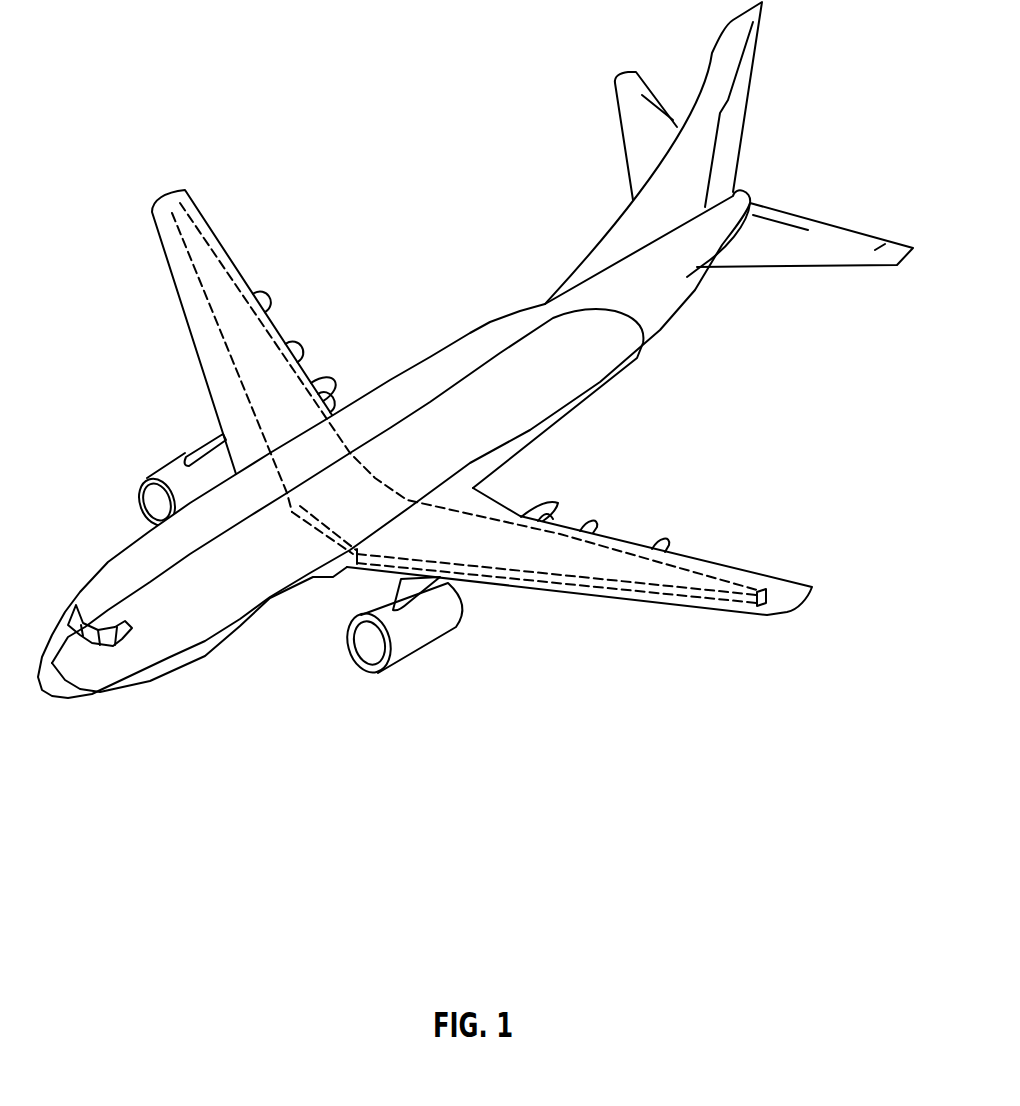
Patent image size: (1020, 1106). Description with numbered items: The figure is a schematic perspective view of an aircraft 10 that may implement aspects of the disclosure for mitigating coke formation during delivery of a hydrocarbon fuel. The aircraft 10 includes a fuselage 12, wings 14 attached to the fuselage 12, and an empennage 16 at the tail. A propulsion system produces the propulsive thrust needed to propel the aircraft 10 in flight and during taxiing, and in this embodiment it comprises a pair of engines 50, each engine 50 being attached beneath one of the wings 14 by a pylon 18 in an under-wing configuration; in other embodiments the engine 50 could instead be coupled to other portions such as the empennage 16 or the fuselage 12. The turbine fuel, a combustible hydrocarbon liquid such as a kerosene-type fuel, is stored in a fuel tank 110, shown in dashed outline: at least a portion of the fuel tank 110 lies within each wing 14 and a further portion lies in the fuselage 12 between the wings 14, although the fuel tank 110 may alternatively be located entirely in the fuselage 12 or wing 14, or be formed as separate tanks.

The aircraft 10 is at (188, 420).
The fuselage 12 is at (567, 396).
The wings 14 is at (183, 272).
The empennage 16 is at (785, 87).
The pylon 18 is at (473, 591).
The engine 50 is at (457, 669).
The fuel tank 110 is at (625, 564).